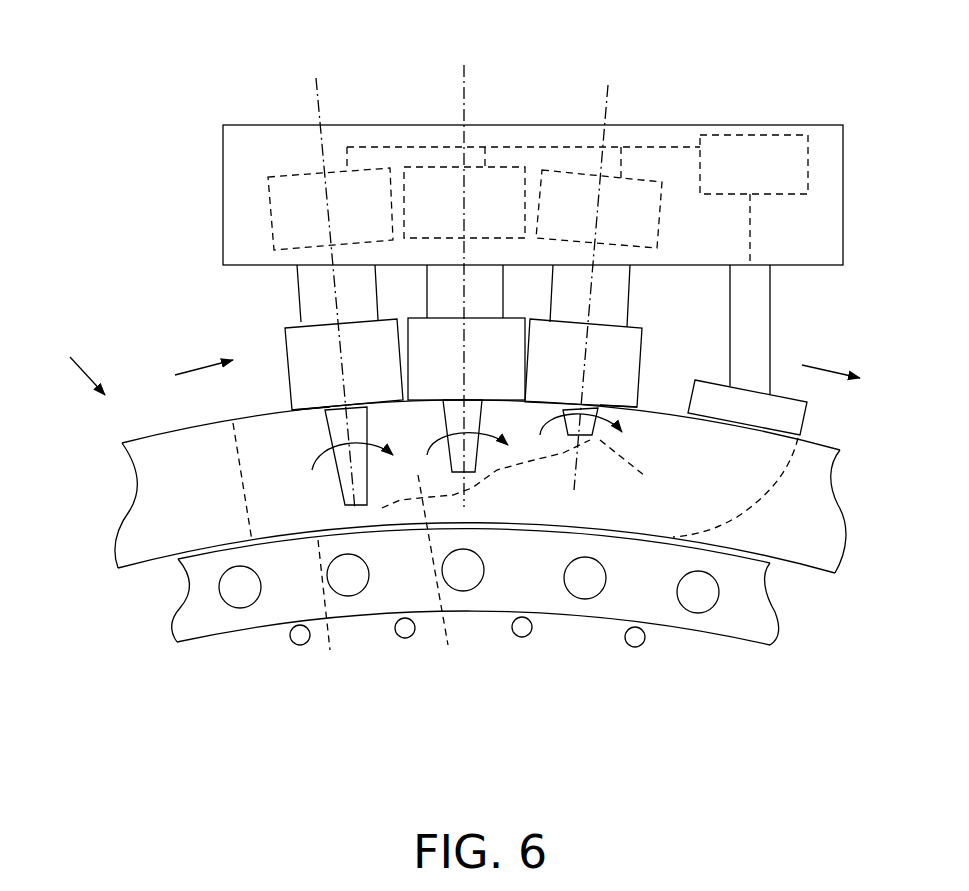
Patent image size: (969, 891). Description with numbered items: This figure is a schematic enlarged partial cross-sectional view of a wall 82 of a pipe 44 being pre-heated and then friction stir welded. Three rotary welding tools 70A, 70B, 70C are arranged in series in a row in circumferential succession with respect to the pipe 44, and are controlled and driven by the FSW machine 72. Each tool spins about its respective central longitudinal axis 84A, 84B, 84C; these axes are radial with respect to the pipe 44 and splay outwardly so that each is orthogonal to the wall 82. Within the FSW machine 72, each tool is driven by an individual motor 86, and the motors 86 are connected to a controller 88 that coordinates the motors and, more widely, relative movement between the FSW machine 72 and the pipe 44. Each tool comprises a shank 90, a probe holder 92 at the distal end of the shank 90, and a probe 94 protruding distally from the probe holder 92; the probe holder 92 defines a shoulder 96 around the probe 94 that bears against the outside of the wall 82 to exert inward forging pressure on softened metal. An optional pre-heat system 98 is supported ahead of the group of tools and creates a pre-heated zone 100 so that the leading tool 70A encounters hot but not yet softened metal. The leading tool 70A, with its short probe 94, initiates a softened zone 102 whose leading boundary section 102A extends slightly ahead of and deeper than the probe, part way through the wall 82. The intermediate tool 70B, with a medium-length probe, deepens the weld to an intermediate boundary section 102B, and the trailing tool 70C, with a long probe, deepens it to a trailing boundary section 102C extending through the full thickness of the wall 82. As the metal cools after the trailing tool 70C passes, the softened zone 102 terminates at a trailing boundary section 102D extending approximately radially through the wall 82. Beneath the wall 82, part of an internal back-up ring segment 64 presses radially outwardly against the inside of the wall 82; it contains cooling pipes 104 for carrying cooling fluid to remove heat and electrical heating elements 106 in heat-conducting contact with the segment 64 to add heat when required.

The pipe 44 is at (72, 367).
The back-up ring segment 64 is at (437, 626).
The leading tool 70A is at (614, 363).
The intermediate tool 70B is at (455, 362).
The trailing tool 70C is at (335, 366).
The FSW machine 72 is at (478, 155).
The wall 82 is at (432, 550).
The central longitudinal axis 84A is at (613, 102).
The central longitudinal axis 84B is at (468, 106).
The central longitudinal axis 84C is at (320, 110).
The motor 86 is at (300, 200).
The controller 88 is at (762, 152).
The shank 90 is at (310, 300).
The probe holder 92 is at (623, 360).
The probe 94 is at (347, 495).
The shoulder 96 is at (307, 410).
The pre-heat system 98 is at (795, 413).
The pre-heated zone 100 is at (708, 478).
The softened zone 102 is at (445, 581).
The leading boundary section 102A is at (648, 478).
The intermediate boundary section 102B is at (473, 490).
The trailing boundary section 102C is at (343, 620).
The trailing boundary section 102D is at (243, 488).
The cooling pipes 104 is at (228, 592).
The electrical heating elements 106 is at (630, 638).